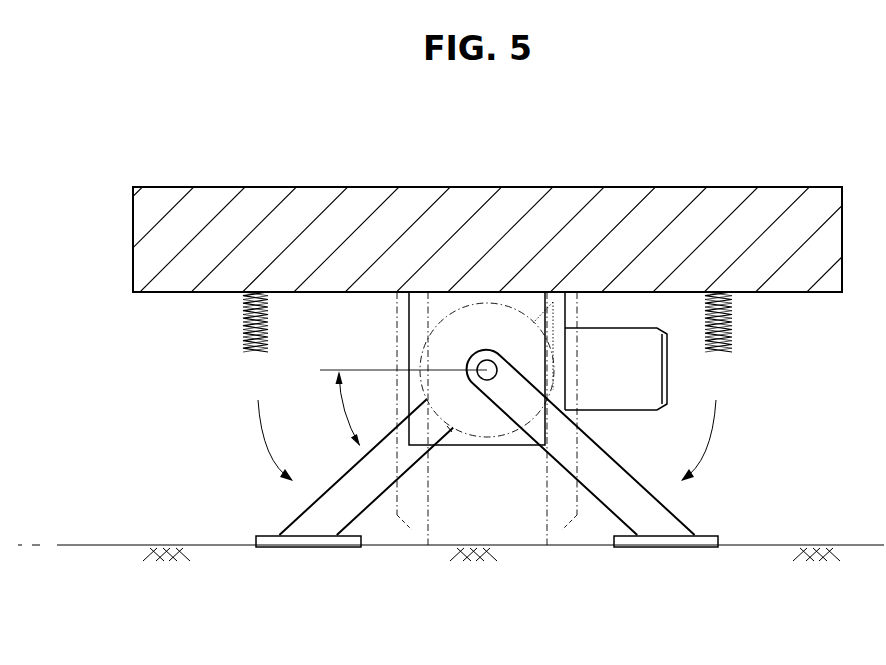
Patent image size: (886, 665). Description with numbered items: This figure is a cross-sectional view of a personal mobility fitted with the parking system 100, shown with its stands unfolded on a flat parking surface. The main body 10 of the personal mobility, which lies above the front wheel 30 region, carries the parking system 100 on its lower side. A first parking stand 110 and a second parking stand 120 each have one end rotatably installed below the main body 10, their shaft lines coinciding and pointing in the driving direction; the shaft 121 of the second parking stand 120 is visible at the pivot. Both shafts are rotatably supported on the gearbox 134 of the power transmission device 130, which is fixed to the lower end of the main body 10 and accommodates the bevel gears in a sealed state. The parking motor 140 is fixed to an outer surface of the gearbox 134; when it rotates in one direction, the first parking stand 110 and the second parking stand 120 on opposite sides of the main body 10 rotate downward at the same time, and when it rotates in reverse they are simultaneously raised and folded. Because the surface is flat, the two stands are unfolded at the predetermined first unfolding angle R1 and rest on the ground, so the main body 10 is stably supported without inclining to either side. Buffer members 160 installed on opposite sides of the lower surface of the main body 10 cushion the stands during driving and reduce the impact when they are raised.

The main body 10 is at (262, 202).
The front wheel 30 is at (408, 528).
The parking system 100 is at (229, 404).
The first parking stand 110 is at (318, 513).
The second parking stand 120 is at (656, 512).
The shaft of the second parking stand 121 is at (488, 361).
The power transmission device 130 is at (488, 452).
The gearbox 134 is at (452, 432).
The parking motor 140 is at (647, 382).
The buffer members 160 is at (244, 327).
The first unfolding angle R1 is at (397, 408).